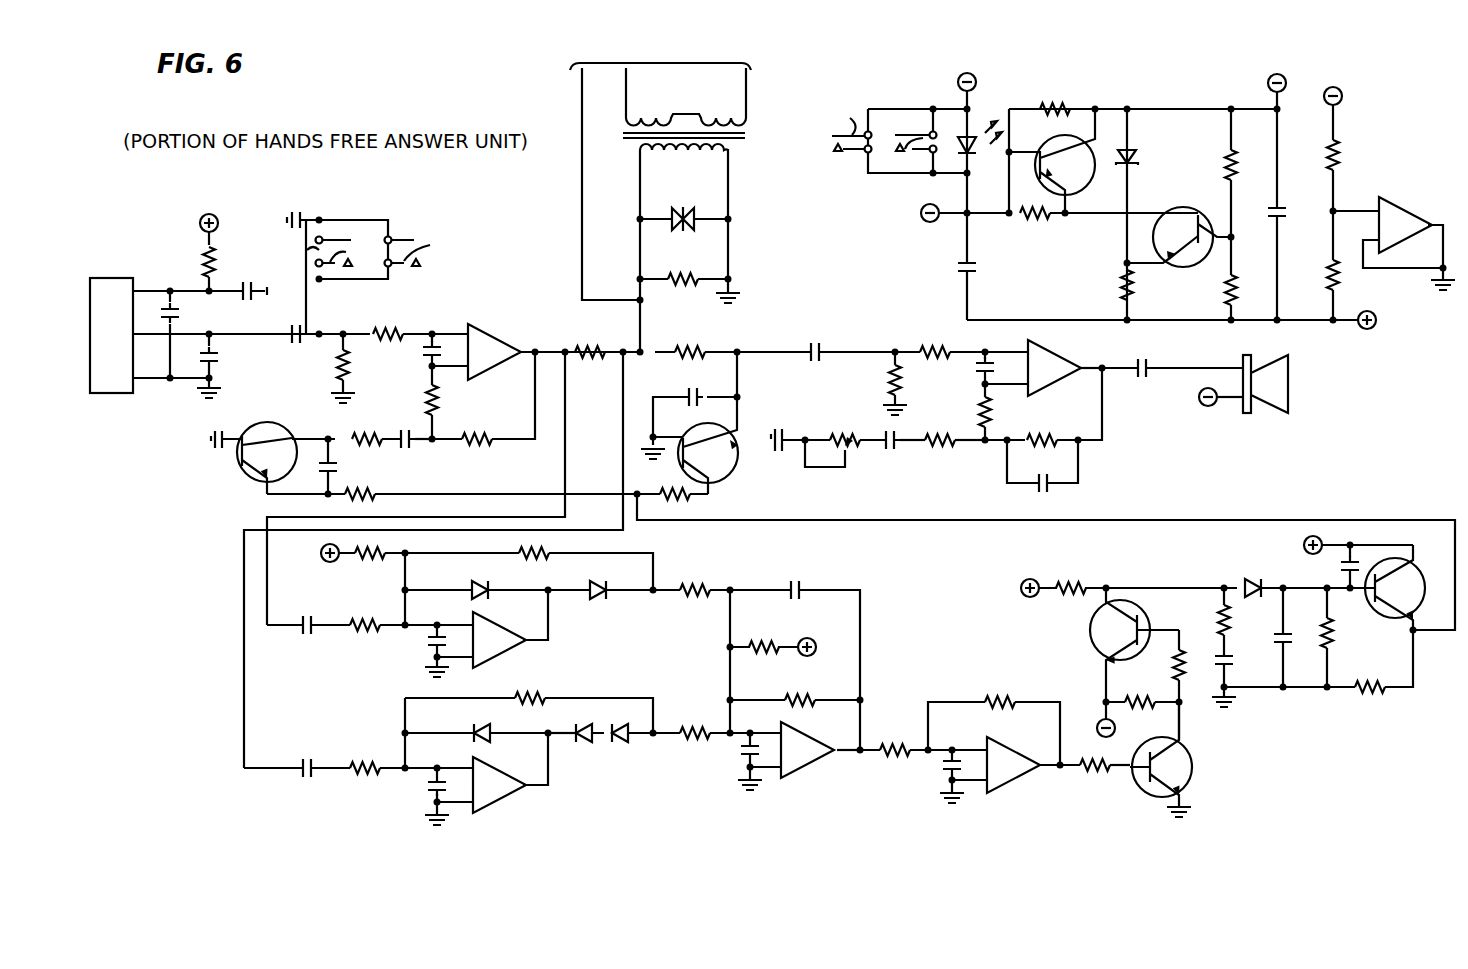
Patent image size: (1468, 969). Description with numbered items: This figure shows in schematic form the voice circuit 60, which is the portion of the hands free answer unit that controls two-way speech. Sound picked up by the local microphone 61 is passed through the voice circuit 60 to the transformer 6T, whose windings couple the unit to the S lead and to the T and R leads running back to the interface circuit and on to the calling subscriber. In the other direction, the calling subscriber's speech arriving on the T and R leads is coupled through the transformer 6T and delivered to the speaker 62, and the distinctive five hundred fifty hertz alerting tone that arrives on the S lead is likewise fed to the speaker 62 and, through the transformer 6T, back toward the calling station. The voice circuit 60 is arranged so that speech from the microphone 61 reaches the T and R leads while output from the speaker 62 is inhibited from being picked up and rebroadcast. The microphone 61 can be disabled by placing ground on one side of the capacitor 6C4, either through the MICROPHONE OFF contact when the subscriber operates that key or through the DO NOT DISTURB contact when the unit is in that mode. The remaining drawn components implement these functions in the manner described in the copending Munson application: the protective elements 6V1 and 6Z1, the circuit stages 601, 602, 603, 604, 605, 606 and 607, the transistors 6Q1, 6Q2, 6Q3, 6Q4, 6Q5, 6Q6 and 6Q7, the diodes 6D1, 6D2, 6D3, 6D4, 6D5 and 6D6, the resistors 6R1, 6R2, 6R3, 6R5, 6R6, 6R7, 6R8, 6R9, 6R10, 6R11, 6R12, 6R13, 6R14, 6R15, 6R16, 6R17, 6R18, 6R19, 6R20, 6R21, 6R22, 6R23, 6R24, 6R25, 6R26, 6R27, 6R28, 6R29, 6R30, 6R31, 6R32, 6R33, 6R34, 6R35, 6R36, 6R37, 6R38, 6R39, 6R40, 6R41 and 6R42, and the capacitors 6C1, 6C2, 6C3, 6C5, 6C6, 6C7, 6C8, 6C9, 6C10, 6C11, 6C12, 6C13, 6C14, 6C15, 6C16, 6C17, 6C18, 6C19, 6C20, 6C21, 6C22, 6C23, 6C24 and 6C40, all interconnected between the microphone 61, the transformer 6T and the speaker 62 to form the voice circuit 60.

The voice circuit 60 is at (398, 123).
The microphone 61 is at (104, 280).
The speaker 62 is at (1271, 363).
The transformer 6T is at (698, 136).
The varistor 6V1 is at (684, 206).
The zener diode 6Z1 is at (1145, 214).
The operational amplifier 601 is at (491, 339).
The operational amplifier 602 is at (1054, 348).
The operational amplifier 603 is at (1392, 204).
The operational amplifier 604 is at (498, 632).
The operational amplifier 605 is at (498, 779).
The operational amplifier 606 is at (813, 753).
The operational amplifier 607 is at (1005, 753).
The transistor 6Q1 is at (283, 428).
The transistor 6Q2 is at (733, 462).
The transistor 6Q3 is at (1049, 140).
The transistor 6Q4 is at (1189, 206).
The transistor 6Q5 is at (1090, 626).
The transistor 6Q6 is at (1193, 769).
The transistor 6Q7 is at (1414, 573).
The diode 6D1 is at (476, 580).
The diode 6D2 is at (601, 580).
The diode 6D3 is at (476, 723).
The diode 6D4 is at (580, 742).
The diode 6D5 is at (624, 723).
The diode 6D6 is at (1254, 578).
The resistor 6R1 is at (194, 252).
The resistor 6R2 is at (326, 367).
The resistor 6R3 is at (387, 324).
The resistor 6R5 is at (482, 398).
The resistor 6R6 is at (360, 429).
The resistor 6R7 is at (370, 500).
The resistor 6R8 is at (593, 341).
The resistor 6R9 is at (684, 268).
The resistor 6R10 is at (691, 341).
The resistor 6R11 is at (688, 500).
The potentiometer 6R12 is at (825, 439).
The resistor 6R13 is at (938, 340).
The resistor 6R14 is at (955, 454).
The resistor 6R15 is at (875, 383).
The resistor 6R16 is at (963, 414).
The resistor 6R17 is at (1045, 406).
The resistor 6R18 is at (1043, 226).
The resistor 6R19 is at (1060, 98).
The resistor 6R20 is at (1207, 173).
The resistor 6R21 is at (1207, 280).
The resistor 6R22 is at (1359, 155).
The resistor 6R23 is at (1311, 274).
The resistor 6R24 is at (363, 563).
The resistor 6R25 is at (409, 610).
The resistor 6R26 is at (409, 754).
The resistor 6R27 is at (540, 548).
The resistor 6R28 is at (529, 721).
The resistor 6R29 is at (693, 578).
The resistor 6R30 is at (717, 720).
The resistor 6R31 is at (773, 636).
The resistor 6R32 is at (795, 689).
The resistor 6R33 is at (923, 739).
The resistor 6R34 is at (996, 720).
The resistor 6R35 is at (1122, 578).
The resistor 6R36 is at (1156, 685).
The resistor 6R37 is at (1138, 716).
The resistor 6R38 is at (1200, 619).
The resistor 6R39 is at (1351, 637).
The resistor 6R40 is at (1372, 660).
The resistor 6R41 is at (1103, 777).
The resistor 6R42 is at (1100, 292).
The capacitor 6C1 is at (240, 304).
The capacitor 6C2 is at (191, 334).
The capacitor 6C3 is at (229, 356).
The capacitor 6C4 is at (297, 323).
The capacitor 6C5 is at (408, 454).
The capacitor 6C6 is at (349, 468).
The capacitor 6C7 is at (688, 380).
The capacitor 6C8 is at (817, 341).
The capacitor 6C9 is at (900, 453).
The capacitor 6C10 is at (1043, 494).
The capacitor 6C11 is at (974, 374).
The capacitor 6C12 is at (1172, 358).
The capacitor 6C13 is at (940, 266).
The capacitor 6C14 is at (1300, 200).
The capacitor 6C15 is at (308, 609).
The capacitor 6C16 is at (297, 752).
The capacitor 6C17 is at (426, 791).
The capacitor 6C18 is at (797, 654).
The capacitor 6C19 is at (741, 766).
The capacitor 6C20 is at (936, 767).
The capacitor 6C21 is at (1251, 678).
The capacitor 6C22 is at (1351, 562).
The capacitor 6C23 is at (1269, 642).
The capacitor 6C24 is at (424, 647).
The capacitor 6C40 is at (428, 354).